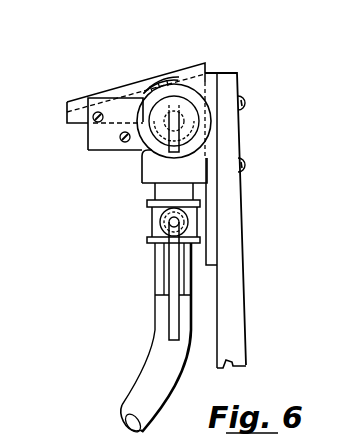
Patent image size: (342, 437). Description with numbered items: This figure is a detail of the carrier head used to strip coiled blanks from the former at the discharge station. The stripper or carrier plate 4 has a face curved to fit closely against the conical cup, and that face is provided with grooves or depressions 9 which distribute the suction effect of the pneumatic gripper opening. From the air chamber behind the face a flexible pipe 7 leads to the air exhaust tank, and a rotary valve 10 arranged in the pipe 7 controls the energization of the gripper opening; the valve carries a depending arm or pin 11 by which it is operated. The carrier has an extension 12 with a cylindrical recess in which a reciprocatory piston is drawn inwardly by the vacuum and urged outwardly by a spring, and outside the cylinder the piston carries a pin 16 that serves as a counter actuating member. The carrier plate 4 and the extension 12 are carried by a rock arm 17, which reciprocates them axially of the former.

The stripper 4 is at (121, 96).
The grooves or depressions 9 is at (143, 93).
The extension 12 is at (143, 122).
The pin 16 is at (163, 150).
The rotary valve 10 is at (174, 218).
The depending arm or pin 11 is at (180, 309).
The flexible pipe 7 is at (160, 360).
The rock arm 17 is at (238, 318).